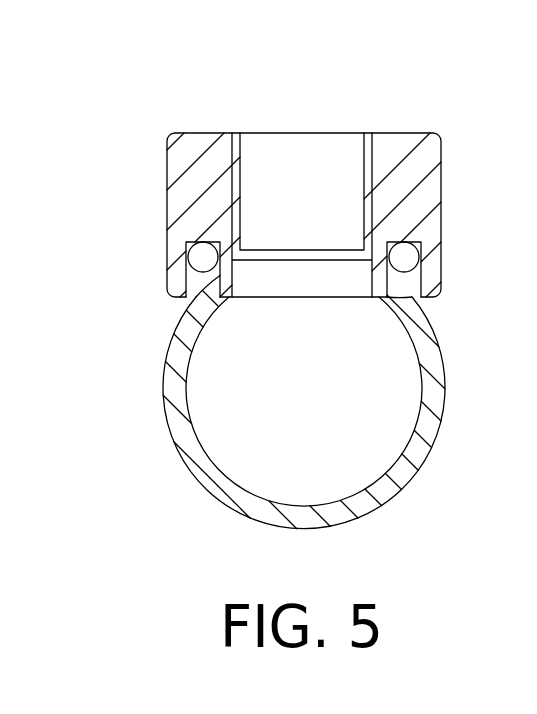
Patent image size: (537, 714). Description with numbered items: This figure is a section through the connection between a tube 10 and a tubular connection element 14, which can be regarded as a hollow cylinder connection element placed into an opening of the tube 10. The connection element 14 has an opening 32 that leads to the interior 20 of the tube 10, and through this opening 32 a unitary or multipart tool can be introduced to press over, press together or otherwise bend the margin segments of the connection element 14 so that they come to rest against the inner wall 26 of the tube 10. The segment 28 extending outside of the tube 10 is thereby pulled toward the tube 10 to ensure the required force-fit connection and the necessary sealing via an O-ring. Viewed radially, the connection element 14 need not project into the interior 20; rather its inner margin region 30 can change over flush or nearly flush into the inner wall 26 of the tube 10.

The tube 10 is at (235, 490).
The connection element 14 is at (430, 188).
The interior 20 is at (325, 440).
The inner wall 26 is at (408, 443).
The segment extending outside of tube 28 is at (427, 310).
The inner margin region 30 is at (196, 300).
The opening 32 is at (337, 158).